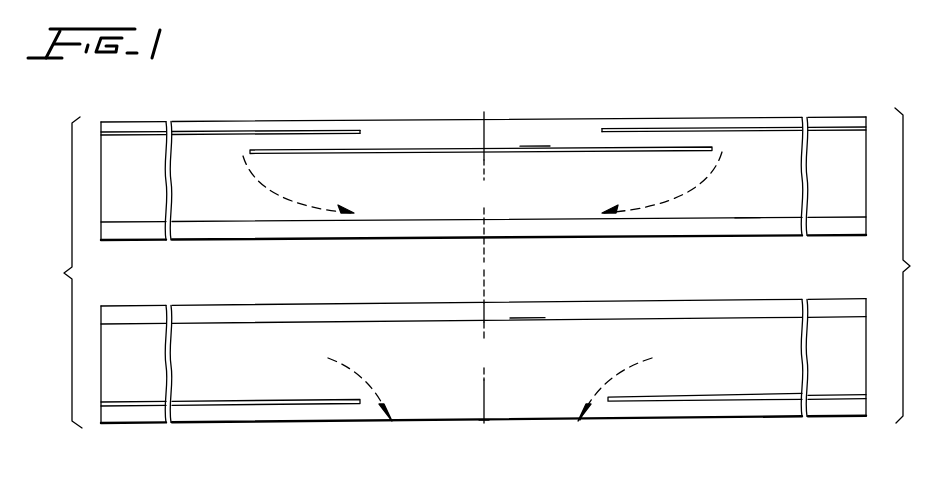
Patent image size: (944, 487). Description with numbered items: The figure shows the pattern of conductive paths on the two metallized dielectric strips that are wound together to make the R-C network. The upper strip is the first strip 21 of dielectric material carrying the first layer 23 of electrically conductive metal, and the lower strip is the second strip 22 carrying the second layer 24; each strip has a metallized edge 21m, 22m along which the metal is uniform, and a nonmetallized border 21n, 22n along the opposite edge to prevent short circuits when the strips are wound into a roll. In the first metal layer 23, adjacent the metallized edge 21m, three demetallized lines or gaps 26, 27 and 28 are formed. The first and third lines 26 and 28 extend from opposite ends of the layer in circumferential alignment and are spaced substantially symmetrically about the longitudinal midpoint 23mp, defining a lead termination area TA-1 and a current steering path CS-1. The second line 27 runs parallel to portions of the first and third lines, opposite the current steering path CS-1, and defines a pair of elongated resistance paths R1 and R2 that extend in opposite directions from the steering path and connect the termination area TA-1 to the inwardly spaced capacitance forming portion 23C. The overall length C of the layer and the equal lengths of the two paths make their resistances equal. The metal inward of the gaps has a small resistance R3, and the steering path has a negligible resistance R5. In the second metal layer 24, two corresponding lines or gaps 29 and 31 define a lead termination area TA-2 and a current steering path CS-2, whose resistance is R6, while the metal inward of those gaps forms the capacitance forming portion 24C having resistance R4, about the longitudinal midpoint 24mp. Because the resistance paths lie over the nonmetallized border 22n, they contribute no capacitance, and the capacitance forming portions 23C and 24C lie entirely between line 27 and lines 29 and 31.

The first strip of dielectric material 21 is at (606, 250).
The metallized edge 21m is at (218, 120).
The nonmetallized border 21n is at (258, 229).
The second strip of dielectric material 22 is at (673, 293).
The metallized edge 22m is at (220, 417).
The nonmetallized border 22n is at (302, 310).
The first layer of electrically conductive metal 23 is at (733, 208).
The capacitance forming portion 23C is at (405, 212).
The longitudinal midpoint 23mp is at (484, 247).
The second layer of electrically conductive metal 24 is at (737, 322).
The capacitance forming portion 24C is at (526, 332).
The longitudinal midpoint 24mp is at (484, 297).
The first demetallized line or gap 26 is at (181, 131).
The second demetallized line or gap 27 is at (535, 146).
The third demetallized line or gap 28 is at (739, 128).
The line or gap 29 is at (290, 406).
The line or gap 31 is at (673, 401).
The overall length C is at (100, 113).
The lead termination area TA-1 is at (602, 90).
The lead termination area TA-2 is at (608, 430).
The resistance path R1 is at (250, 90).
The resistance path R2 is at (602, 97).
The third resistance R3 is at (500, 207).
The fourth resistance R4 is at (500, 367).
The resistance R5 is at (447, 146).
The resistance R6 is at (472, 414).
The current steering path CS-1 is at (389, 133).
The current steering path CS-2 is at (365, 392).